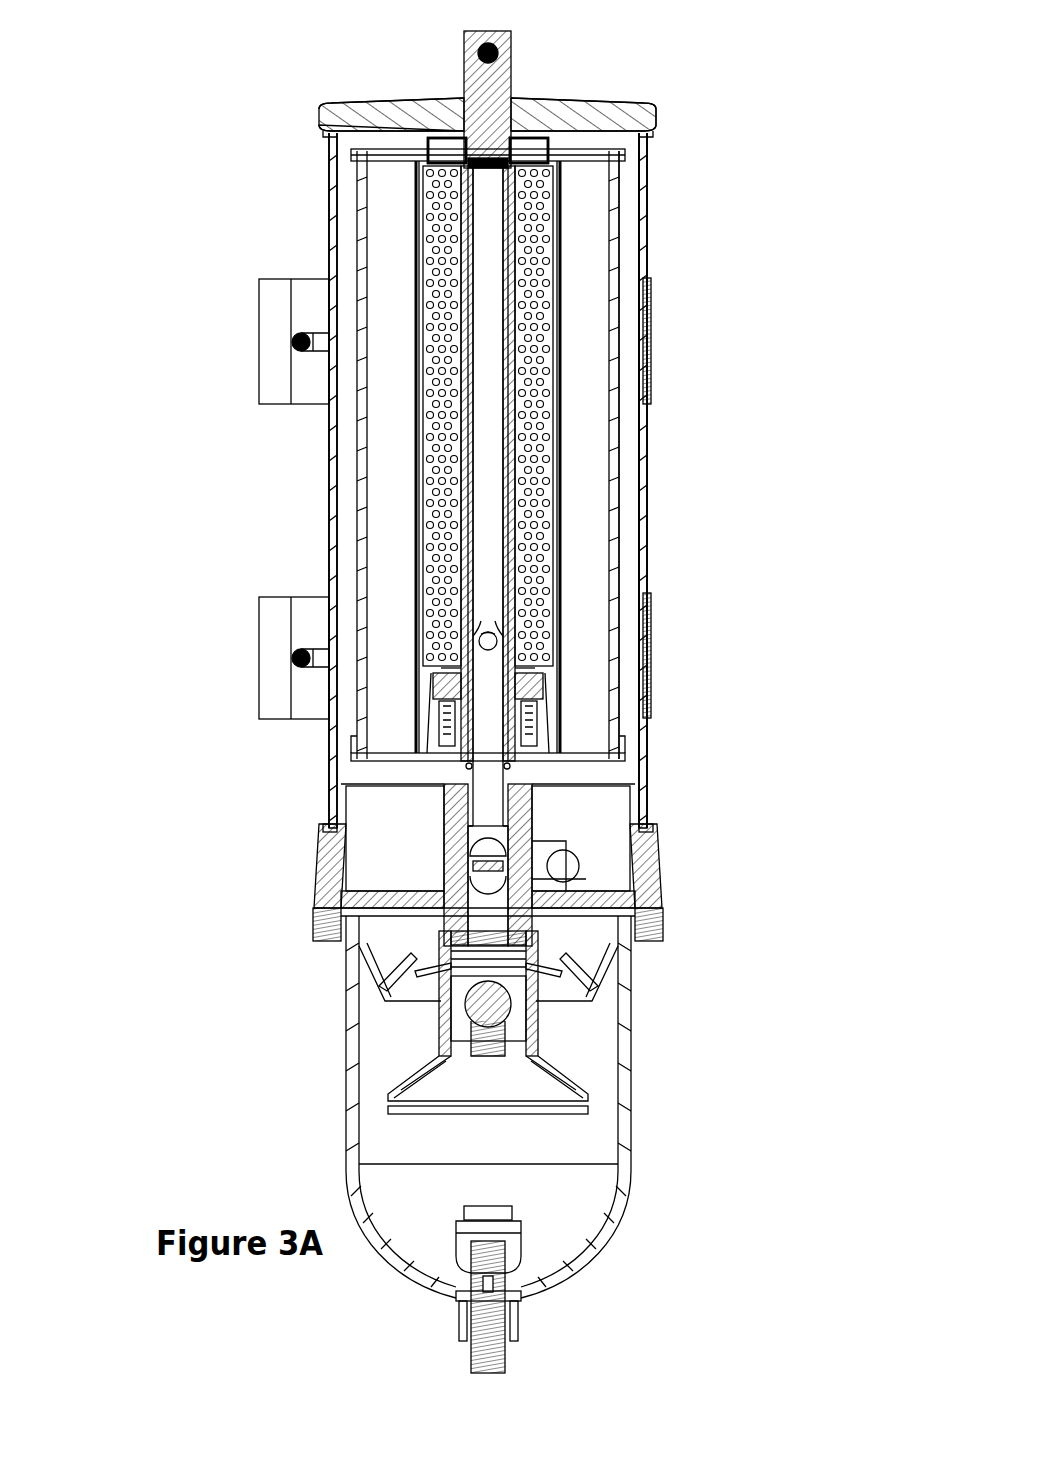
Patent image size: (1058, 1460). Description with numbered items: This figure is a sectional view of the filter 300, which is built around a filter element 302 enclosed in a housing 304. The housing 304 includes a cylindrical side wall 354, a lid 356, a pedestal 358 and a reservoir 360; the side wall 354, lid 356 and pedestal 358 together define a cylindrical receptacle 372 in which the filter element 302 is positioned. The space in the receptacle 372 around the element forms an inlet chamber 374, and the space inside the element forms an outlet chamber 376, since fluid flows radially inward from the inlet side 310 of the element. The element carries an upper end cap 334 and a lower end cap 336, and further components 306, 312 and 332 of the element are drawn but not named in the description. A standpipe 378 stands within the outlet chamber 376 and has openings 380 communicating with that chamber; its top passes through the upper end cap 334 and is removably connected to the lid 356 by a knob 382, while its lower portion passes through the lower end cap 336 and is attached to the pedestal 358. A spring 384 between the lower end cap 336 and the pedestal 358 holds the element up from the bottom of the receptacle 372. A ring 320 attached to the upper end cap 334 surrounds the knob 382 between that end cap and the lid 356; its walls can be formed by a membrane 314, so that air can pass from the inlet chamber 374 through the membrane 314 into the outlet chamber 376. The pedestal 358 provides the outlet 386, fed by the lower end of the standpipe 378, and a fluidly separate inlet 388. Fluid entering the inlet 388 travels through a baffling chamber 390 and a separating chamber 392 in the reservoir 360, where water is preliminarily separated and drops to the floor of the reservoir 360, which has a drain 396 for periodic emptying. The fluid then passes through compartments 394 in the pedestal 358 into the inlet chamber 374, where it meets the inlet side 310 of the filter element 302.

The filter 300 is at (748, 408).
The filter element 302 is at (598, 435).
The housing 304 is at (660, 467).
The filter element 306 is at (600, 320).
The inlet side 310 is at (615, 528).
The inner perforated tube 312 is at (432, 490).
The membrane 314 is at (538, 150).
The ring 320 is at (538, 150).
The outer perforated tube 332 is at (546, 604).
The upper end cap 334 is at (640, 152).
The lower end cap 336 is at (590, 760).
The cylindrical side wall 354 is at (640, 224).
The lid 356 is at (393, 100).
The pedestal 358 is at (648, 848).
The reservoir 360 is at (622, 1066).
The receptacle 372 is at (630, 270).
The inlet chamber 374 is at (630, 502).
The outlet chamber 376 is at (455, 226).
The standpipe 378 is at (466, 440).
The openings 380 is at (478, 640).
The knob 382 is at (500, 50).
The spring 384 is at (446, 768).
The outlet 386 is at (642, 795).
The inlet 388 is at (492, 868).
The baffling chamber 390 is at (548, 1022).
The separating chamber 392 is at (400, 1002).
The compartments 394 is at (360, 880).
The drain 396 is at (522, 1310).